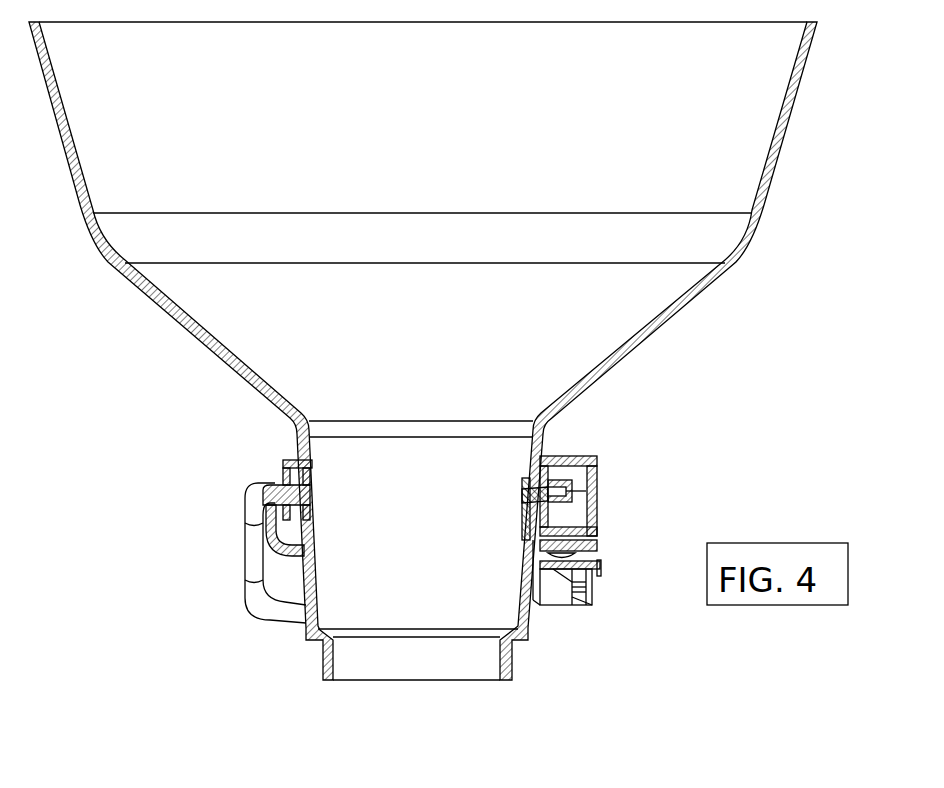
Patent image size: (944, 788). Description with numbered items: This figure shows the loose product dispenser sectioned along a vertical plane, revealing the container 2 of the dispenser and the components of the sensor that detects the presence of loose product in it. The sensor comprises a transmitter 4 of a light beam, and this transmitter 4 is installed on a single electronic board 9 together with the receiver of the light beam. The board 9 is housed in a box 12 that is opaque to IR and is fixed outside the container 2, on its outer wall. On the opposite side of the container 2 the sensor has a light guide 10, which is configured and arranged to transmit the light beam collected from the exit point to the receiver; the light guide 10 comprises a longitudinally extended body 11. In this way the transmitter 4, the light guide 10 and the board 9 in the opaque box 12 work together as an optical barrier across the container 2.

The container 2 is at (780, 163).
The transmitter 4 is at (525, 490).
The electronic board 9 is at (597, 472).
The light guide 10 is at (243, 590).
The longitudinally extended body 11 is at (252, 543).
The box 12 is at (593, 607).